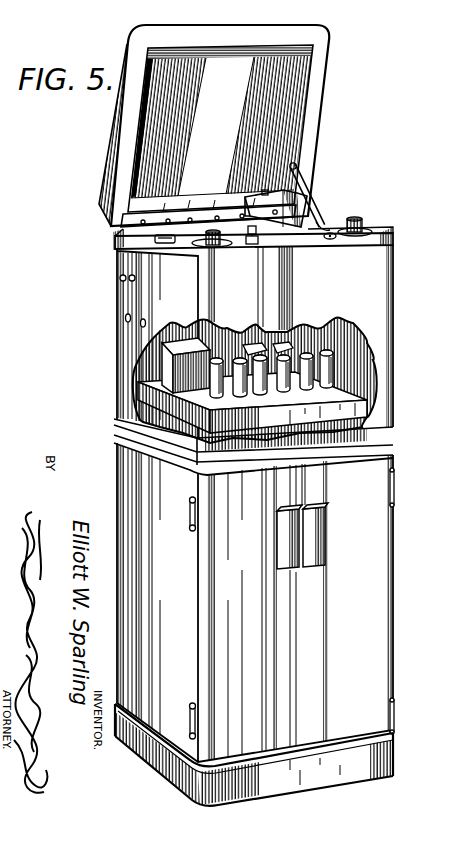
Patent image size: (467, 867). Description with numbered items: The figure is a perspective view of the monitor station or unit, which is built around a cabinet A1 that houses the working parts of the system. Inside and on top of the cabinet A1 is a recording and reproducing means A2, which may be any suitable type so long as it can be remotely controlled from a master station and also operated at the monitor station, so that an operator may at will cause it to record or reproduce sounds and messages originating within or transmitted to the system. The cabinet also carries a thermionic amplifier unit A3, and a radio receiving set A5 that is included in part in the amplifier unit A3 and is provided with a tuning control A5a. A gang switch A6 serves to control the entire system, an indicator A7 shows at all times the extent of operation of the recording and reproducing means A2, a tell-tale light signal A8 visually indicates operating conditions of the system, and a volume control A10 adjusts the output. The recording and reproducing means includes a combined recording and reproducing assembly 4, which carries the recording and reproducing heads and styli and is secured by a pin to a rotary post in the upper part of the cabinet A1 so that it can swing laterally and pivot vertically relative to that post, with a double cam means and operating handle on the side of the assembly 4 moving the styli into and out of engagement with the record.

The cabinet A1 is at (247, 525).
The recording and reproducing means A2 is at (284, 196).
The thermionic amplifier unit A3 is at (350, 407).
The radio receiving set A5 is at (170, 362).
The tuning control A5a is at (201, 243).
The gang switch A6 is at (363, 224).
The indicator A7 is at (160, 239).
The tell-tale light signal A8 is at (332, 240).
The volume control A10 is at (252, 246).
The combined recording and reproducing assembly 4 is at (285, 215).